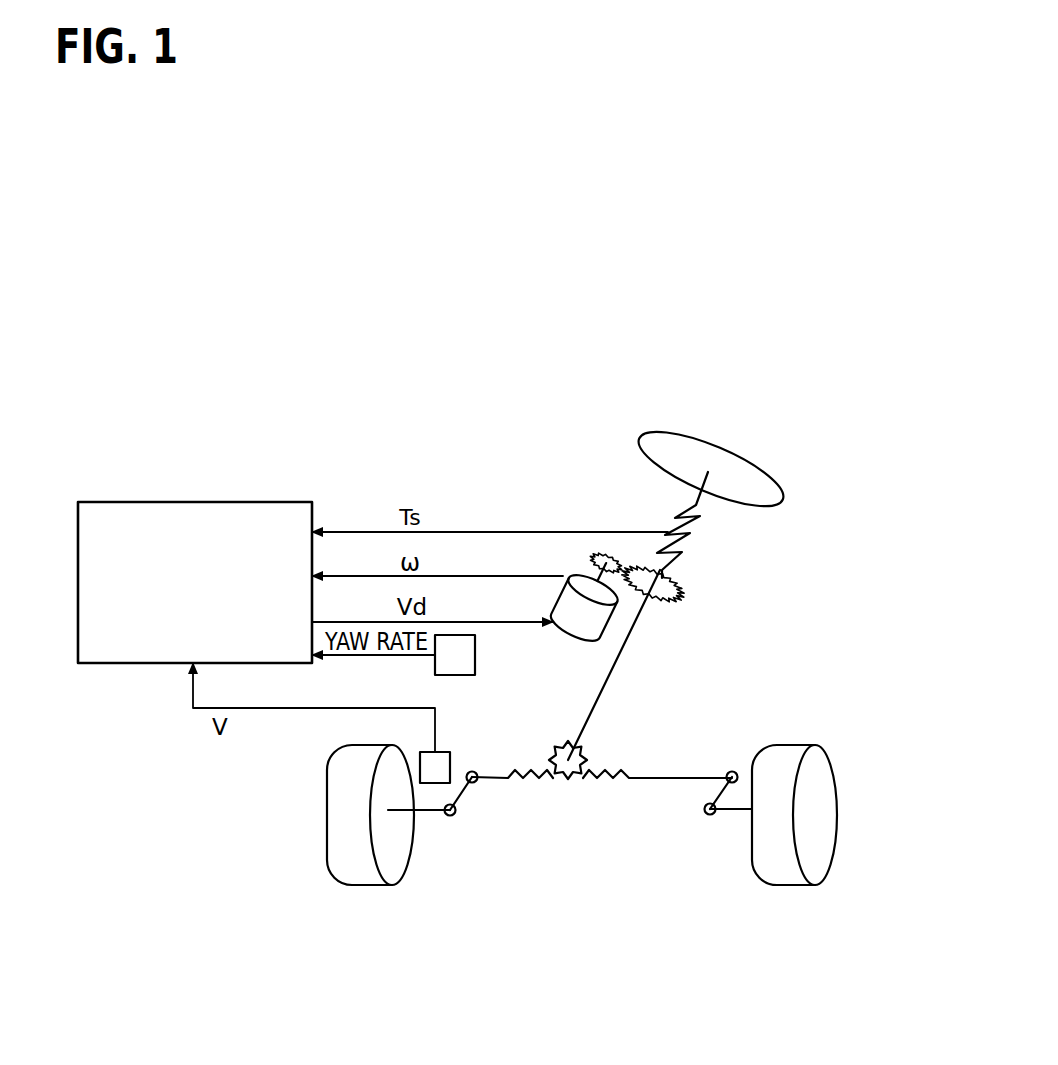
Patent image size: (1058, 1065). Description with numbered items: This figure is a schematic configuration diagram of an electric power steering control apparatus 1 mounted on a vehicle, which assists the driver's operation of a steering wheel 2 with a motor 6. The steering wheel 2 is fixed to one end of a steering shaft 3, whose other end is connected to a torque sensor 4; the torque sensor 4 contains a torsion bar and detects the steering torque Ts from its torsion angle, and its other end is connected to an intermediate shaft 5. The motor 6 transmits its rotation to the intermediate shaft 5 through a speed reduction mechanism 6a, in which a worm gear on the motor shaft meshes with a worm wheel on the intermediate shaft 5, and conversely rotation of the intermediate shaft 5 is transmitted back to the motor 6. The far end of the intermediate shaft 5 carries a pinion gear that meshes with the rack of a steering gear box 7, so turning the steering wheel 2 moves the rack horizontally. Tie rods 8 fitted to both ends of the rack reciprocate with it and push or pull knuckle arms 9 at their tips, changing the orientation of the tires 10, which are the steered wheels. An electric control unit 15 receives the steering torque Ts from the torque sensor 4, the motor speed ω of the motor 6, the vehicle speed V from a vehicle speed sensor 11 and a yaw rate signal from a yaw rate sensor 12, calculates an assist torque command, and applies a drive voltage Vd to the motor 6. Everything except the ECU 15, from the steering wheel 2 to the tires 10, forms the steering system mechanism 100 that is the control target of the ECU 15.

The electric power steering control apparatus 1 is at (729, 352).
The steering system mechanism 100 is at (590, 480).
The steering wheel 2 is at (765, 462).
The steering shaft 3 is at (698, 494).
The torque sensor 4 is at (692, 528).
The intermediate shaft 5 is at (632, 637).
The motor 6 is at (573, 633).
The speed reduction mechanism 6a is at (690, 584).
The steering gear box 7 is at (602, 751).
The tie rods 8 is at (495, 780).
The knuckle arms 9 is at (433, 813).
The tires 10 is at (328, 812).
The vehicle speed sensor 11 is at (447, 750).
The yaw rate sensor 12 is at (476, 648).
The electric control unit (ECU) 15 is at (246, 501).